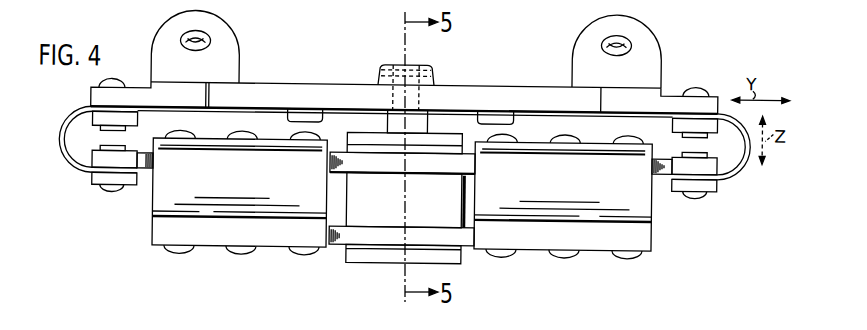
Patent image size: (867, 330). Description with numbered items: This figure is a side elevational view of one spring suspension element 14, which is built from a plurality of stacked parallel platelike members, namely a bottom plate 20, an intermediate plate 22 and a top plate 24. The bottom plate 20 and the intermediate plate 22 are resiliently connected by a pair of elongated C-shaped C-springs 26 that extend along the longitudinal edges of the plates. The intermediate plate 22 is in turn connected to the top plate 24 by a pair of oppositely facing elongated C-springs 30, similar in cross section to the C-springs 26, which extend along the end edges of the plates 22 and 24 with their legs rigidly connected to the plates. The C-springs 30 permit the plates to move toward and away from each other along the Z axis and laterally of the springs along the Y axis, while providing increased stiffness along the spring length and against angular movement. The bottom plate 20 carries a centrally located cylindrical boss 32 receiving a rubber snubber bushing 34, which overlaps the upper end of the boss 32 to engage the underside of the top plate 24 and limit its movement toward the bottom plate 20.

The spring suspension element 14 is at (678, 55).
The bottom plate 20 is at (467, 246).
The intermediate plate 22 is at (141, 150).
The top plate 24 is at (303, 66).
The C-spring 26 is at (154, 197).
The C-spring 30 is at (64, 169).
The cylindrical boss 32 is at (389, 213).
The snubber bushing 34 is at (361, 264).